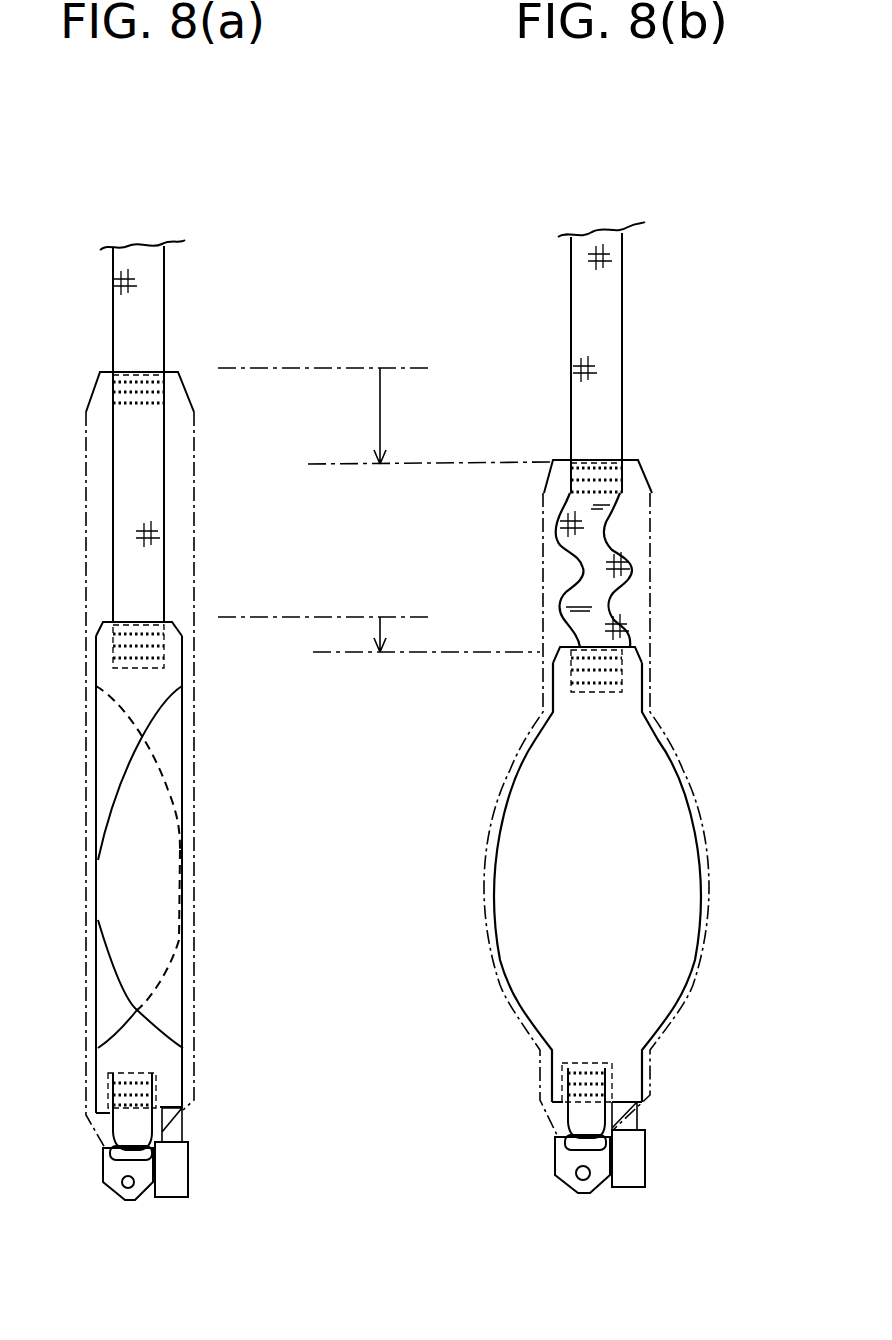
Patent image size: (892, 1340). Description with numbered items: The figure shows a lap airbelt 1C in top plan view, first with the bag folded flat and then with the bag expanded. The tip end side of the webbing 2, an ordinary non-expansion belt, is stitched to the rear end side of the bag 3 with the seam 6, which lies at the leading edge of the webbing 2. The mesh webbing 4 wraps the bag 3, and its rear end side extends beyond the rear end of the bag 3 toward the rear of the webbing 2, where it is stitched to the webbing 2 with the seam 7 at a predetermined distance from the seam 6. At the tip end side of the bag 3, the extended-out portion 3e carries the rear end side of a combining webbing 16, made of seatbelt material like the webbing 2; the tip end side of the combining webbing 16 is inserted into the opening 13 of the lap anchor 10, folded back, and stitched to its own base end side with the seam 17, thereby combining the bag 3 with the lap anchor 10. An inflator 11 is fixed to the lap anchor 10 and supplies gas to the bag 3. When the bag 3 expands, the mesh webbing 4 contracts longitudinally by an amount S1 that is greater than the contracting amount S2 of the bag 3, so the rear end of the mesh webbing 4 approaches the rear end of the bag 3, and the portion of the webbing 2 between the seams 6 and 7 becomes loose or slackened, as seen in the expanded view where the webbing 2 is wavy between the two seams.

In FIG. 8A, the lap airbelt 1C is at (201, 191).
In FIG. 8A, the webbing 2 is at (150, 290).
In FIG. 8B, the webbing 2 is at (622, 256).
In FIG. 8A, the bag 3 is at (120, 872).
In FIG. 8B, the bag 3 is at (663, 798).
In FIG. 8A, the extended-out portion 3e is at (98, 1095).
In FIG. 8B, the extended-out portion 3e is at (551, 1087).
In FIG. 8A, the mesh webbing 4 is at (87, 508).
In FIG. 8B, the mesh webbing 4 is at (654, 512).
In FIG. 8A, the seam 6 is at (147, 627).
In FIG. 8B, the seam 6 is at (618, 670).
In FIG. 8A, the seam 7 is at (135, 378).
In FIG. 8B, the seam 7 is at (603, 463).
In FIG. 8A, the lap anchor 10 is at (133, 1199).
In FIG. 8B, the lap anchor 10 is at (584, 1193).
In FIG. 8A, the inflator 11 is at (188, 1185).
In FIG. 8B, the inflator 11 is at (637, 1167).
In FIG. 8A, the opening 13 is at (117, 1173).
In FIG. 8B, the opening 13 is at (558, 1158).
In FIG. 8A, the combining webbing 16 is at (120, 1124).
In FIG. 8B, the combining webbing 16 is at (585, 1120).
In FIG. 8A, the seam 17 is at (143, 1073).
In FIG. 8B, the seam 17 is at (593, 1067).
In FIG. 8B, the contracting amount of the mesh webbing S1 is at (380, 412).
In FIG. 8B, the contracting amount of the bag S2 is at (380, 628).